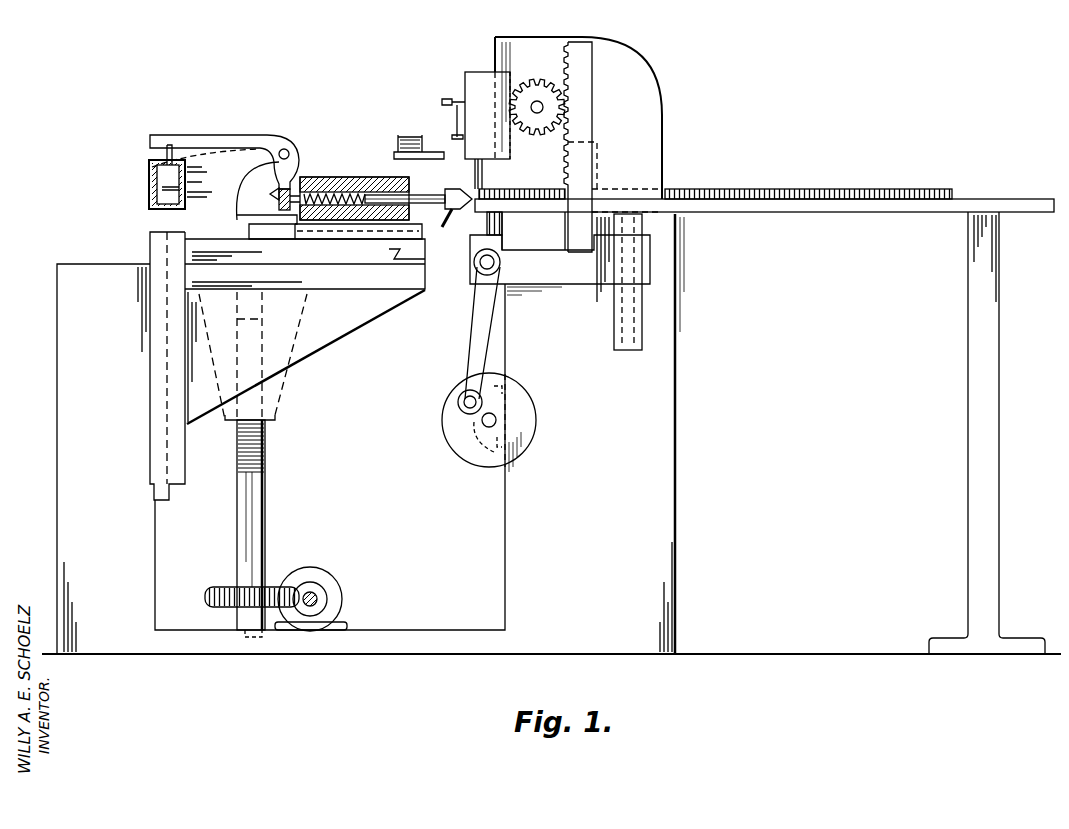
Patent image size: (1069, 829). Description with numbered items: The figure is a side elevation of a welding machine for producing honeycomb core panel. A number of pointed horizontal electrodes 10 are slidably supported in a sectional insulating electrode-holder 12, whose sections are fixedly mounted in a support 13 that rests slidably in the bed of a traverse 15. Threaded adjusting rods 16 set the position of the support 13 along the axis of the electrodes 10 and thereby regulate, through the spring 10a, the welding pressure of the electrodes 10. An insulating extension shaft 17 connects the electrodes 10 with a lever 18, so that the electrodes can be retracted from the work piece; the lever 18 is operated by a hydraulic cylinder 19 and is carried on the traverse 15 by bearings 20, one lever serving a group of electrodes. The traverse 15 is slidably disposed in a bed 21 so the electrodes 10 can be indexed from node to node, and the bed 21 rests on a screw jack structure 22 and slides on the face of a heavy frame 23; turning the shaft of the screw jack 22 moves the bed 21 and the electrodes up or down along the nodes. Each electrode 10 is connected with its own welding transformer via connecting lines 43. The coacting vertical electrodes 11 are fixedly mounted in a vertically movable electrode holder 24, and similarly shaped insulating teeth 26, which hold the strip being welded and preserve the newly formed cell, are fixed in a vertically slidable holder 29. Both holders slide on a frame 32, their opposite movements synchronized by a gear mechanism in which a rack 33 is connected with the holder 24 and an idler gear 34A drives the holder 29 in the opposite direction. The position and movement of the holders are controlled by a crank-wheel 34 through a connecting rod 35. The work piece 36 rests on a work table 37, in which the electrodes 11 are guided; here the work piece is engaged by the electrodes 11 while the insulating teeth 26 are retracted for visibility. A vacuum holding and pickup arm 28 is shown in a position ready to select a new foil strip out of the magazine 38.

The horizontal electrodes 10 is at (385, 193).
The spring 10a is at (317, 175).
The vertical electrodes 11 is at (492, 222).
The sectional insulating electrode-holder 12 is at (343, 175).
The support 13 is at (412, 230).
The traverse 15 is at (375, 255).
The threaded adjusting rods 16 is at (240, 230).
The insulating extension shaft 17 is at (275, 183).
The lever 18 is at (272, 142).
The hydraulic cylinder 19 is at (147, 188).
The bearings 20 is at (290, 150).
The bed 21 is at (348, 278).
The screw jack structure 22 is at (263, 487).
The heavy frame 23 is at (72, 332).
The vertically movable electrode holder 24 is at (473, 264).
The insulating teeth 26 is at (481, 168).
The holding and pickup arm 28 is at (448, 100).
The vertically slidable holder 29 is at (475, 82).
The frame 32 is at (650, 93).
The rack 33 is at (582, 103).
The crank-wheel 34 is at (473, 447).
The idler gear 34A is at (522, 88).
The connecting rod 35 is at (470, 342).
The work piece 36 is at (757, 190).
The work table 37 is at (978, 197).
The magazine 38 is at (400, 140).
The connecting lines 43 is at (452, 212).